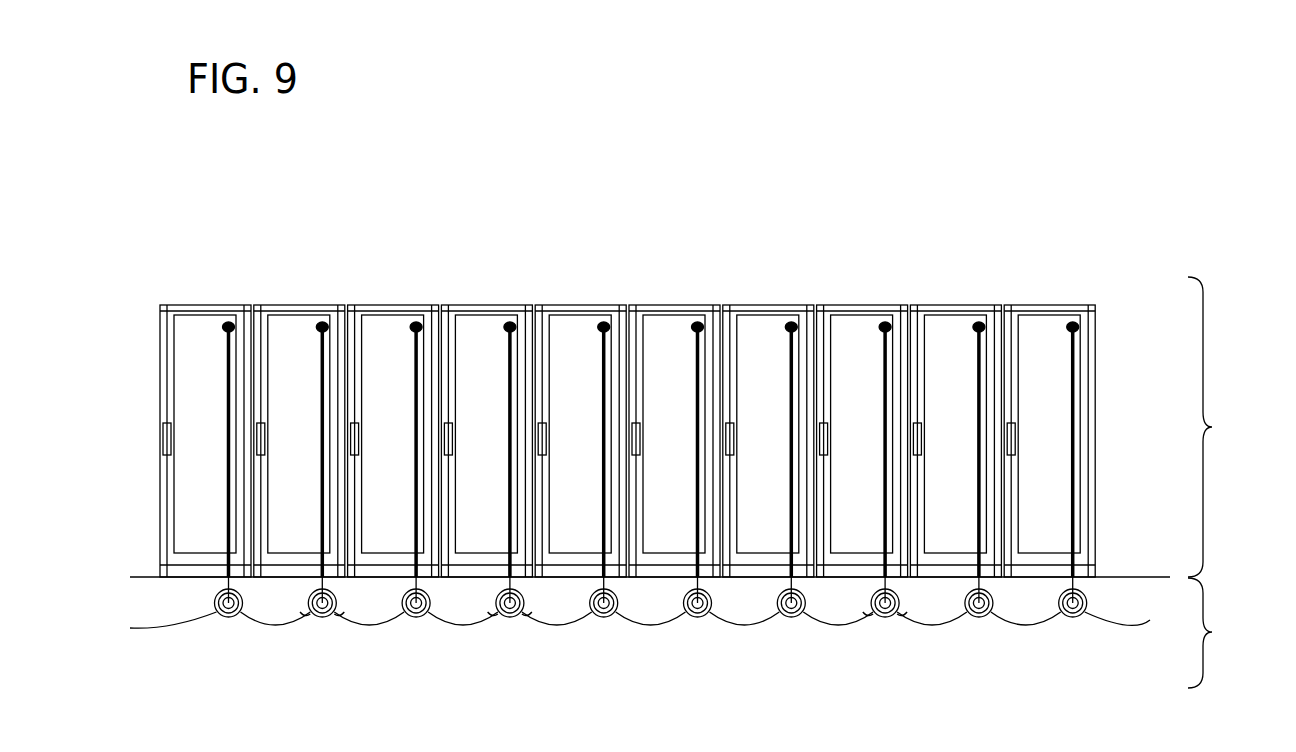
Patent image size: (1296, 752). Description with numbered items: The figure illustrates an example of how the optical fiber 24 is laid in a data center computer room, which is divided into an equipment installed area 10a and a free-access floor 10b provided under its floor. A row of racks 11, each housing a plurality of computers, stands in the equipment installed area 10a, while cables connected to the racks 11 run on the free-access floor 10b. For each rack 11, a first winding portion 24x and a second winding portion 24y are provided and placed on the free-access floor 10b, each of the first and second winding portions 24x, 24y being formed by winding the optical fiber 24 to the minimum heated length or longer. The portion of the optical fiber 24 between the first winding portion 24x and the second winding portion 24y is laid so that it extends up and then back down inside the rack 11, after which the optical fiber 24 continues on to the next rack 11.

The rack 11 is at (207, 305).
The optical fiber 24 is at (636, 628).
The first winding portion 24x is at (308, 614).
The second winding portion 24y is at (336, 614).
The equipment installed area 10a is at (1224, 427).
The free-access floor 10b is at (1225, 633).